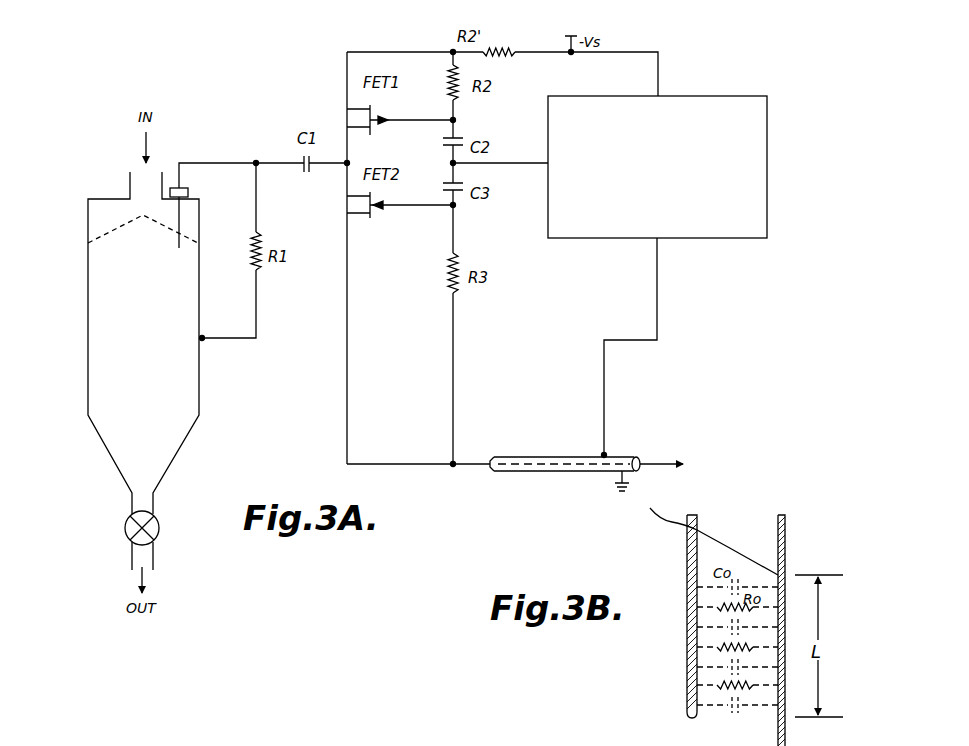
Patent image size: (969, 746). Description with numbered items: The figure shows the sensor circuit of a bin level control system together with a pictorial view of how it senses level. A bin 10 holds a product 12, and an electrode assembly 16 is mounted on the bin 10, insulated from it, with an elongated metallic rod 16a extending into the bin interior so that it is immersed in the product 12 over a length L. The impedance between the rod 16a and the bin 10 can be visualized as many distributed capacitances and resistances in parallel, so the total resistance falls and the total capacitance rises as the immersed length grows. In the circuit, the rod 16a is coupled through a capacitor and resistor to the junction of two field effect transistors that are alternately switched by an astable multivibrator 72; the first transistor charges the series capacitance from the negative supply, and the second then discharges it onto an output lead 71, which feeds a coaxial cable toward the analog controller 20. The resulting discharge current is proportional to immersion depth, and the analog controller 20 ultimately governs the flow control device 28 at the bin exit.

In FIG. 3A, the bin 10 is at (203, 389).
In FIG. 3B, the bin 10 is at (797, 539).
In FIG. 3A, the product 12 is at (103, 267).
In FIG. 3B, the product 12 is at (687, 525).
In FIG. 3A, the electrode assembly 16 is at (189, 192).
In FIG. 3A, the electrode rod 16a is at (179, 225).
In FIG. 3B, the electrode rod 16a is at (687, 562).
In FIG. 3A, the analog controller 20 is at (748, 460).
In FIG. 3A, the flow control device 28 is at (124, 526).
In FIG. 3A, the output lead 71 is at (412, 458).
In FIG. 3A, the astable multivibrator 72 is at (717, 96).